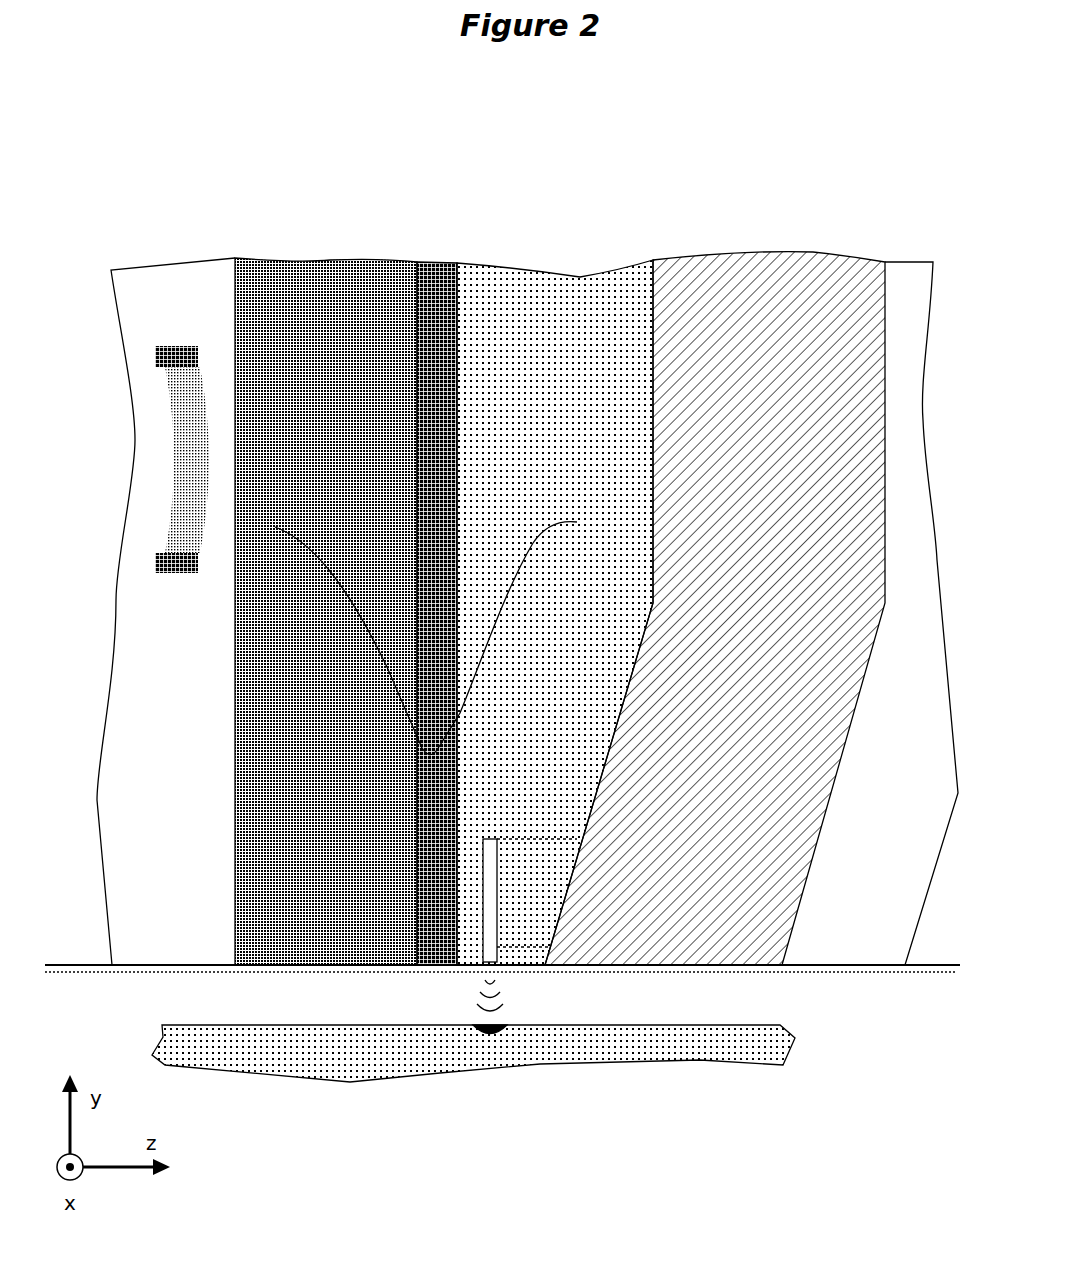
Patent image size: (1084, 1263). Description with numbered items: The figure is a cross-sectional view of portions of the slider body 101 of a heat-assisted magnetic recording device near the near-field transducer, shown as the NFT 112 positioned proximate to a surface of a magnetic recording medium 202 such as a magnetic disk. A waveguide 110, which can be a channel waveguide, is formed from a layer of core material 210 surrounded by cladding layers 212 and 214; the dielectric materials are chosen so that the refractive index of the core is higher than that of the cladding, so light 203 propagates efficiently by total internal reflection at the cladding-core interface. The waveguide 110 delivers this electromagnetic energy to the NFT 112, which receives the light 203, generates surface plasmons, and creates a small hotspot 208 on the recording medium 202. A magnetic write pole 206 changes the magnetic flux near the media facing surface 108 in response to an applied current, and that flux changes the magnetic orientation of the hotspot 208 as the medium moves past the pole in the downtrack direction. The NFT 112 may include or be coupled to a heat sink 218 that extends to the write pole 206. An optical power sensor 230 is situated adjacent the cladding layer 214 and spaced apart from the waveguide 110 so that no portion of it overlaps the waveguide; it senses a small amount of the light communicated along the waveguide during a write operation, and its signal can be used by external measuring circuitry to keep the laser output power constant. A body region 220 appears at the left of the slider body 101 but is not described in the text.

The slider body 101 is at (508, 565).
The waveguide 110 is at (414, 551).
The cladding layer 214 is at (263, 260).
The core material 210 is at (437, 262).
The cladding layer 212 is at (555, 591).
The magnetic write pole 206 is at (787, 250).
The optical power sensor 230 is at (165, 478).
The light 203 is at (398, 713).
The slider body 220 is at (168, 935).
The NFT 112 is at (483, 957).
The heat sink 218 is at (542, 967).
The media facing surface 108 is at (842, 973).
The magnetic recording medium 202 is at (227, 1047).
The hotspot 208 is at (490, 1033).